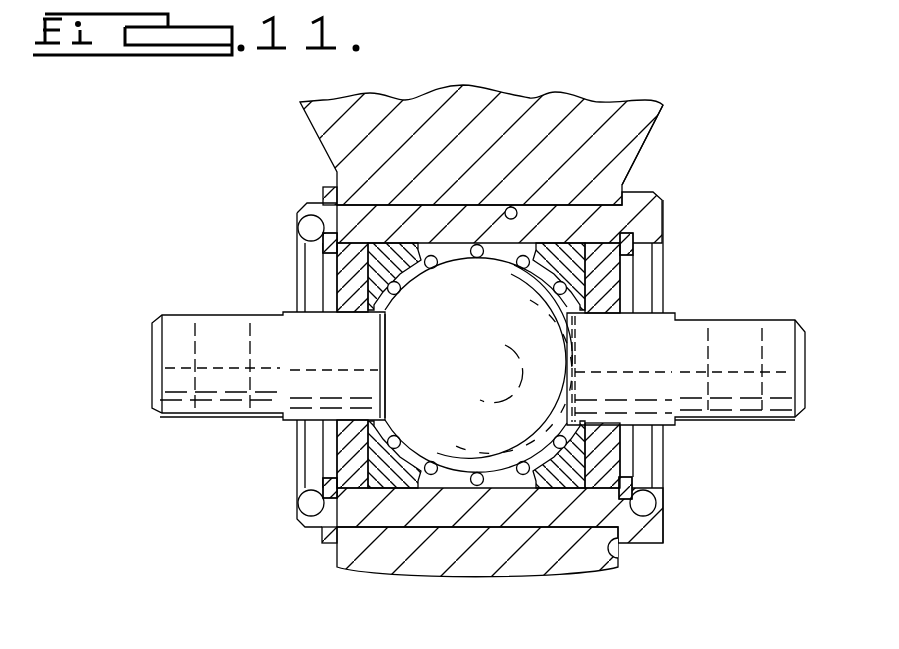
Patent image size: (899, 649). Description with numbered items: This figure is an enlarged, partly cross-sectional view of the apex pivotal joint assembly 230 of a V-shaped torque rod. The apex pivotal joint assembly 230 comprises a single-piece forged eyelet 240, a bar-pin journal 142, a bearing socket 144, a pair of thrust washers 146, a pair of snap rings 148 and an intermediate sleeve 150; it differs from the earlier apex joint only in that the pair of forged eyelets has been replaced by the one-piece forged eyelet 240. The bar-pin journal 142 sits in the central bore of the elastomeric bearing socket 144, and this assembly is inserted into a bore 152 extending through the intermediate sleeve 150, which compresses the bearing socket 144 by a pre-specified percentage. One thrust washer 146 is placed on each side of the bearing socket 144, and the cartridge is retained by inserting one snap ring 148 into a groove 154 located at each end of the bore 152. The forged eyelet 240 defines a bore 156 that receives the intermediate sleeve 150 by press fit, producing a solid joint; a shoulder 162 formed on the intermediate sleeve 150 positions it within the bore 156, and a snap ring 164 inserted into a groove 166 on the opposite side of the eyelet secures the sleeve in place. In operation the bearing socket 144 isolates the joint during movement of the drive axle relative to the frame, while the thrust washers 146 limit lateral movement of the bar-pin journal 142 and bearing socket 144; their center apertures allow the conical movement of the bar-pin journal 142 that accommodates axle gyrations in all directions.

The apex pivotal joint assembly 230 is at (201, 164).
The forged eyelet 240 is at (637, 118).
The bearing socket 144 is at (548, 252).
The intermediate sleeve 150 is at (432, 220).
The bore 156 is at (509, 207).
The groove 166 is at (297, 222).
The snap ring 148 is at (325, 245).
The thrust washer 146 is at (370, 278).
The bore 152 is at (390, 253).
The bar-pin journal 142 is at (500, 386).
The groove 154 is at (300, 511).
The snap ring 164 is at (322, 537).
The shoulder 162 is at (622, 557).